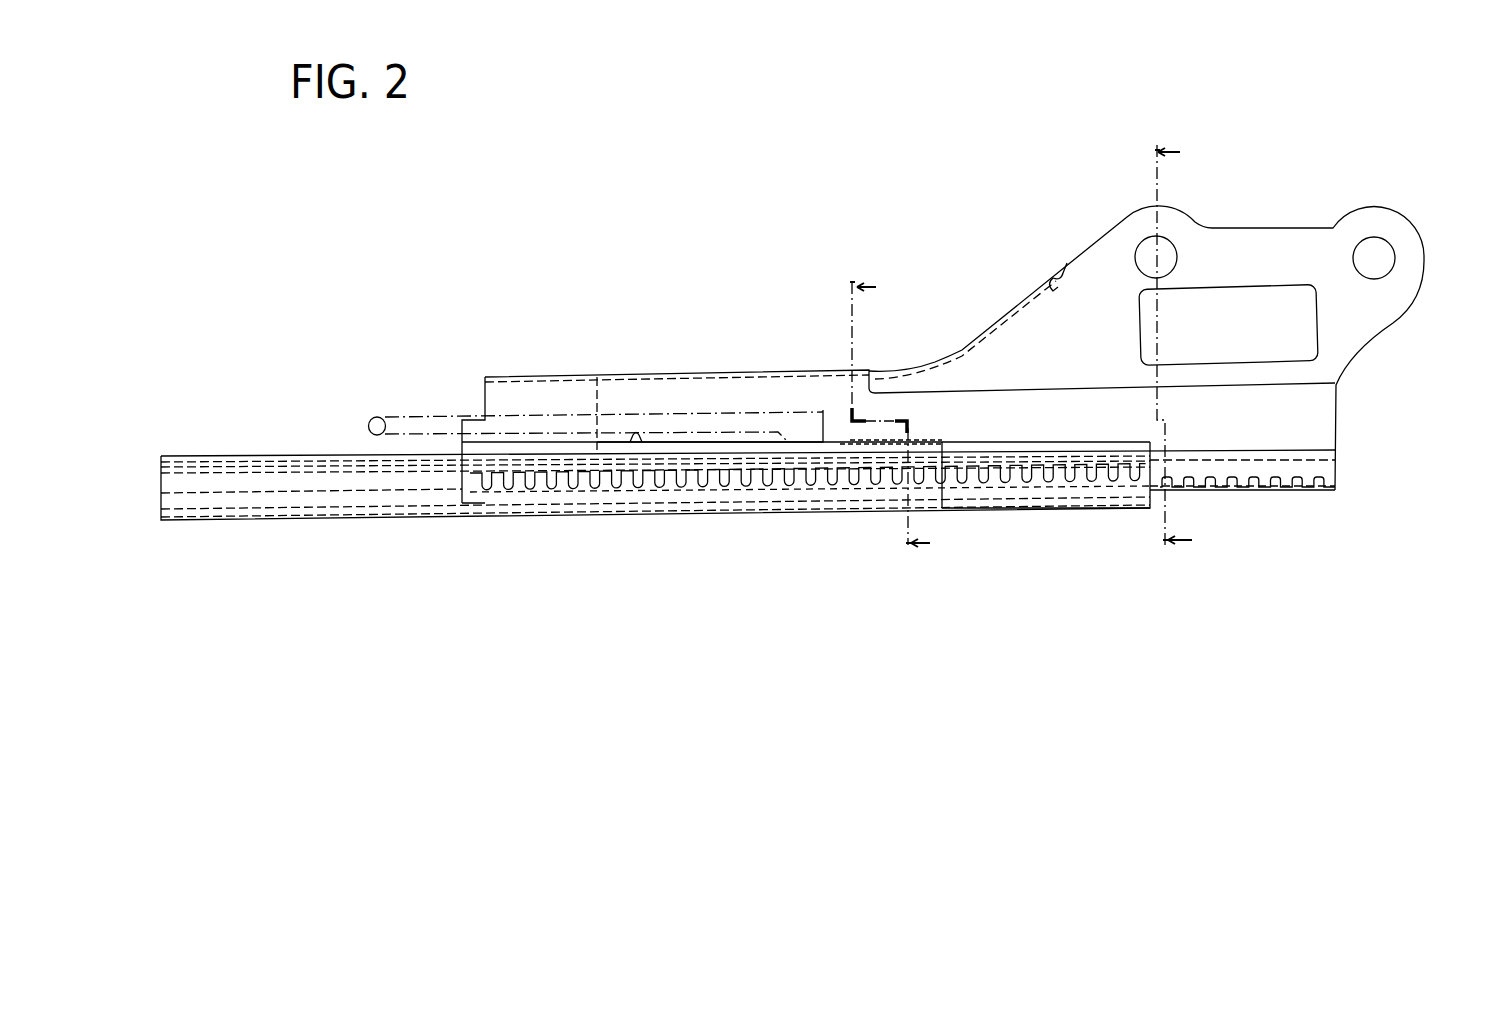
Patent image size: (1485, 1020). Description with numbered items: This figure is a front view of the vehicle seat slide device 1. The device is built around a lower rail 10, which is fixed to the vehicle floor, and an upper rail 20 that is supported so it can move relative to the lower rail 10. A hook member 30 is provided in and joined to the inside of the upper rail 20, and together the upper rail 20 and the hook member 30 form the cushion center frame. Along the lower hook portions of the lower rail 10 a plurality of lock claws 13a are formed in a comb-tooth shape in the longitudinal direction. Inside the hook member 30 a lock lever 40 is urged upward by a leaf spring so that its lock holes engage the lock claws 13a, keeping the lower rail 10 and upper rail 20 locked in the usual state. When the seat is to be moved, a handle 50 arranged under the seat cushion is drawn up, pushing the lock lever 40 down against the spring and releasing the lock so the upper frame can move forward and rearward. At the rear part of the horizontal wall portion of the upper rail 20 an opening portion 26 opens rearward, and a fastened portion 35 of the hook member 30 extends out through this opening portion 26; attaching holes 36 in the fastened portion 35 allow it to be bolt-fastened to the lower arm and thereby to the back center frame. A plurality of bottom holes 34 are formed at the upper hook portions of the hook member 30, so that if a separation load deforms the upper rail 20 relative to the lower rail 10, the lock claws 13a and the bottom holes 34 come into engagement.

The vehicle seat slide device 1 is at (708, 245).
The lower rail 10 is at (317, 536).
The lock claws 13a is at (520, 510).
The upper rail 20 is at (552, 359).
The opening portion 26 is at (922, 392).
The hook member 30 is at (1060, 250).
The bottom holes 34 is at (1257, 492).
The fastened portion 35 is at (1262, 253).
The attaching holes 36 is at (1163, 250).
The lock lever 40 is at (850, 440).
The handle 50 is at (412, 415).